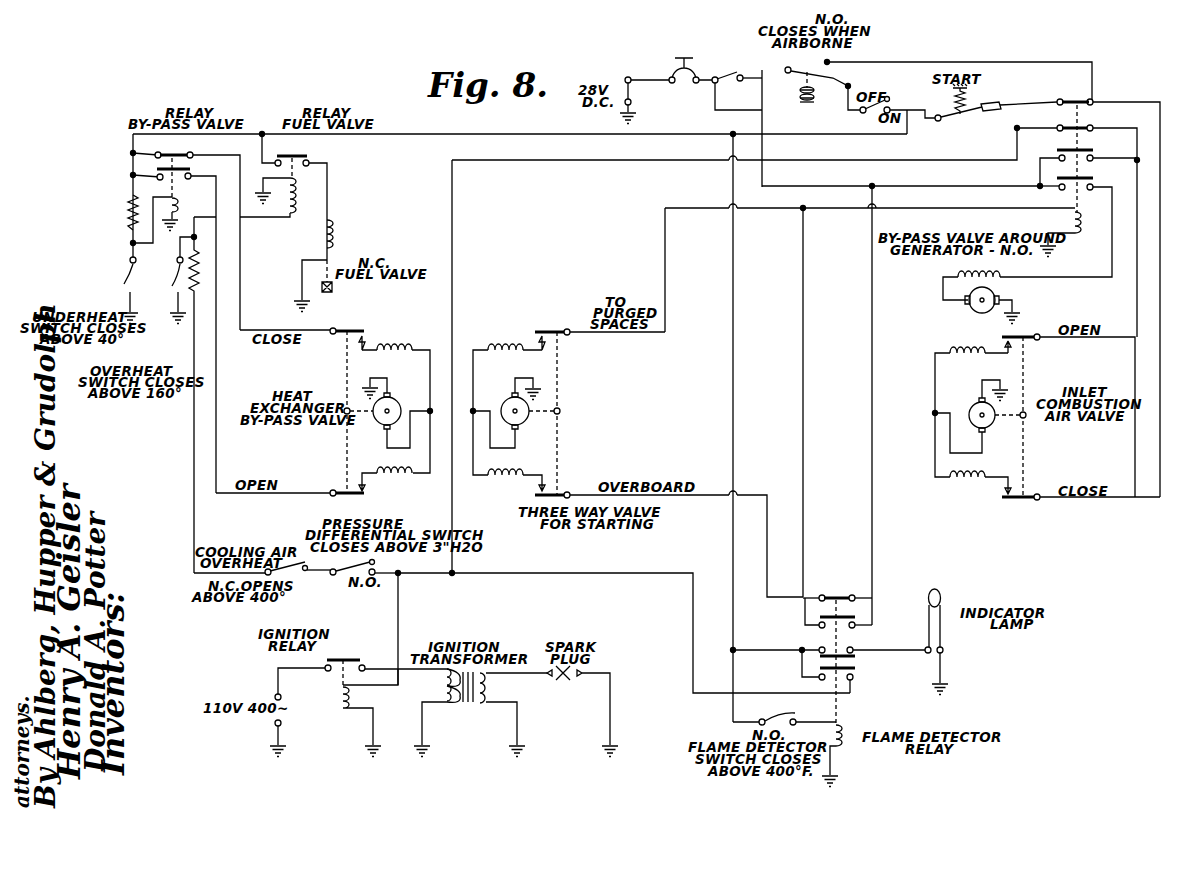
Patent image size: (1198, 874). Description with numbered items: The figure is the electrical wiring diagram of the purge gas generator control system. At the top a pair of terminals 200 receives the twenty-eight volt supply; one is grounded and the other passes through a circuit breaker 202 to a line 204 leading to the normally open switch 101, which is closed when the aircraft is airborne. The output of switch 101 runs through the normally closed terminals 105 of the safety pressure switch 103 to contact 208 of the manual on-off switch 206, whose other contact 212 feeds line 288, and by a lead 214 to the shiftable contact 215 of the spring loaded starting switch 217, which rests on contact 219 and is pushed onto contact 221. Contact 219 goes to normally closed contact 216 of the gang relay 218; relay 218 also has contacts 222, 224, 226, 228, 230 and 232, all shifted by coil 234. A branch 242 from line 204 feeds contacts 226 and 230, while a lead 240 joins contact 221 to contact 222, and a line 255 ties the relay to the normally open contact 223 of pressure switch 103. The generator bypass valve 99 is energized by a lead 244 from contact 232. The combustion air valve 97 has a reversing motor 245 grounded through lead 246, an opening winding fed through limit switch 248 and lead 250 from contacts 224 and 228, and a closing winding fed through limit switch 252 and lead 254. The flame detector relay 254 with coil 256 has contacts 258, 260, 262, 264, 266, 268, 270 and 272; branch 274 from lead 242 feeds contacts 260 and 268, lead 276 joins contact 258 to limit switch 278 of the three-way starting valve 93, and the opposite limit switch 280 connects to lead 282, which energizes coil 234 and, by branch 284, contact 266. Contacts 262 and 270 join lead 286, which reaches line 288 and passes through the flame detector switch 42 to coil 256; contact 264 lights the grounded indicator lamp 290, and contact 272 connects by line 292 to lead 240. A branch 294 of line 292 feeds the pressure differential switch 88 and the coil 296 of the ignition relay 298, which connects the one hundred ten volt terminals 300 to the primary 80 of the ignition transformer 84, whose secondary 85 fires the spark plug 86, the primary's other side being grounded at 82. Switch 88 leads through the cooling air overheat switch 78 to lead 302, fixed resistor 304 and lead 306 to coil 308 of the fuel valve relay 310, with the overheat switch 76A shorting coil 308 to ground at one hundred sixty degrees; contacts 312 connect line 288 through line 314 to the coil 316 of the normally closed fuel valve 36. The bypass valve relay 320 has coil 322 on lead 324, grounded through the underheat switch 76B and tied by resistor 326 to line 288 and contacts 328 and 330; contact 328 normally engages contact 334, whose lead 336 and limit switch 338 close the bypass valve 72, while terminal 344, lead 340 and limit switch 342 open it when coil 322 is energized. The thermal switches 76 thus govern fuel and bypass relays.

The fuel valve 36 is at (335, 294).
The flame detector switch 42 is at (786, 716).
The bypass valve 72 is at (392, 400).
The thermal switches 76 is at (126, 302).
The overheat switch 76A is at (180, 268).
The underheat switch 76B is at (118, 268).
The cooling air overheat switch 78 is at (296, 541).
The ignition transformer primary 80 is at (444, 688).
The transformer primary ground lead 82 is at (446, 704).
The ignition transformer 84 is at (477, 714).
The ignition transformer secondary 85 is at (547, 676).
The spark plug 86 is at (581, 681).
The pressure differential switch 88 is at (384, 584).
The three-way starting valve 93 is at (560, 400).
The combustion air valve 97 is at (1031, 431).
The generator bypass valve 99 is at (1012, 288).
The normally open switch 101 is at (742, 60).
The safety pressure switch 103 is at (800, 93).
The normally closed terminals 105 is at (826, 64).
The terminals 200 is at (632, 88).
The circuit breaker 202 is at (672, 74).
The line 204 is at (708, 90).
The on-off switch 206 is at (862, 114).
The switch contact 208 is at (842, 114).
The switch contact 212 is at (891, 106).
The lead 214 is at (897, 78).
The shiftable contact 215 is at (938, 123).
The normally closed relay contact 216 is at (1054, 92).
The starting switch 217 is at (945, 126).
The gang relay 218 is at (1078, 94).
The starting switch contact 219 is at (984, 104).
The starting switch contact 221 is at (982, 142).
The relay contact 222 is at (1044, 145).
The normally open contact 223 is at (830, 65).
The relay contact 224 is at (1091, 126).
The relay contact 226 is at (1076, 148).
The relay contact 228 is at (1096, 162).
The relay contact 230 is at (1062, 190).
The relay contact 232 is at (1085, 182).
The relay coil 234 is at (1070, 222).
The lead 240 is at (1062, 124).
The branch 242 is at (762, 127).
The lead 244 is at (1102, 274).
The motor 245 is at (965, 397).
The lead 246 is at (1004, 380).
The limit switch 248 is at (1042, 330).
The lead 250 is at (1101, 340).
The limit switch 252 is at (1010, 504).
The flame detector relay 254 is at (1140, 504).
The line 255 is at (992, 60).
The relay coil 256 is at (842, 752).
The relay contact 258 is at (826, 596).
The relay contact 260 is at (857, 595).
The relay contact 262 is at (855, 660).
The relay contact 264 is at (856, 650).
The relay contact 266 is at (820, 626).
The relay contact 268 is at (856, 626).
The relay contact 270 is at (820, 682).
The relay contact 272 is at (859, 684).
The branch 274 is at (872, 468).
The lead 276 is at (762, 596).
The limit switch 278 is at (568, 494).
The limit switch 280 is at (570, 320).
The lead 282 is at (668, 304).
The branch 284 is at (801, 336).
The lead 286 is at (733, 645).
The line 288 is at (600, 132).
The indicator lamp 290 is at (942, 590).
The line 292 is at (560, 167).
The branch 294 is at (445, 582).
The ignition relay coil 296 is at (339, 710).
The ignition relay 298 is at (382, 640).
The 110-volt, 400 cycle terminals 300 is at (291, 708).
The lead 302 is at (216, 492).
The fixed resistor 304 is at (226, 278).
The lead 306 is at (276, 237).
The relay coil 308 is at (301, 196).
The fuel valve relay 310 is at (300, 157).
The relay contacts 312 is at (309, 162).
The line 314 is at (330, 206).
The actuating coil 316 is at (333, 236).
The bypass valve relay 320 is at (149, 153).
The relay coil 322 is at (180, 202).
The lead 324 is at (114, 246).
The fixed resistor 326 is at (116, 214).
The relay contact 328 is at (144, 168).
The relay contact 330 is at (140, 182).
The relay contact 334 is at (194, 155).
The lead 336 is at (304, 330).
The limit switch 338 is at (367, 330).
The lead 340 is at (278, 497).
The limit switch 342 is at (342, 492).
The relay terminal 344 is at (188, 176).